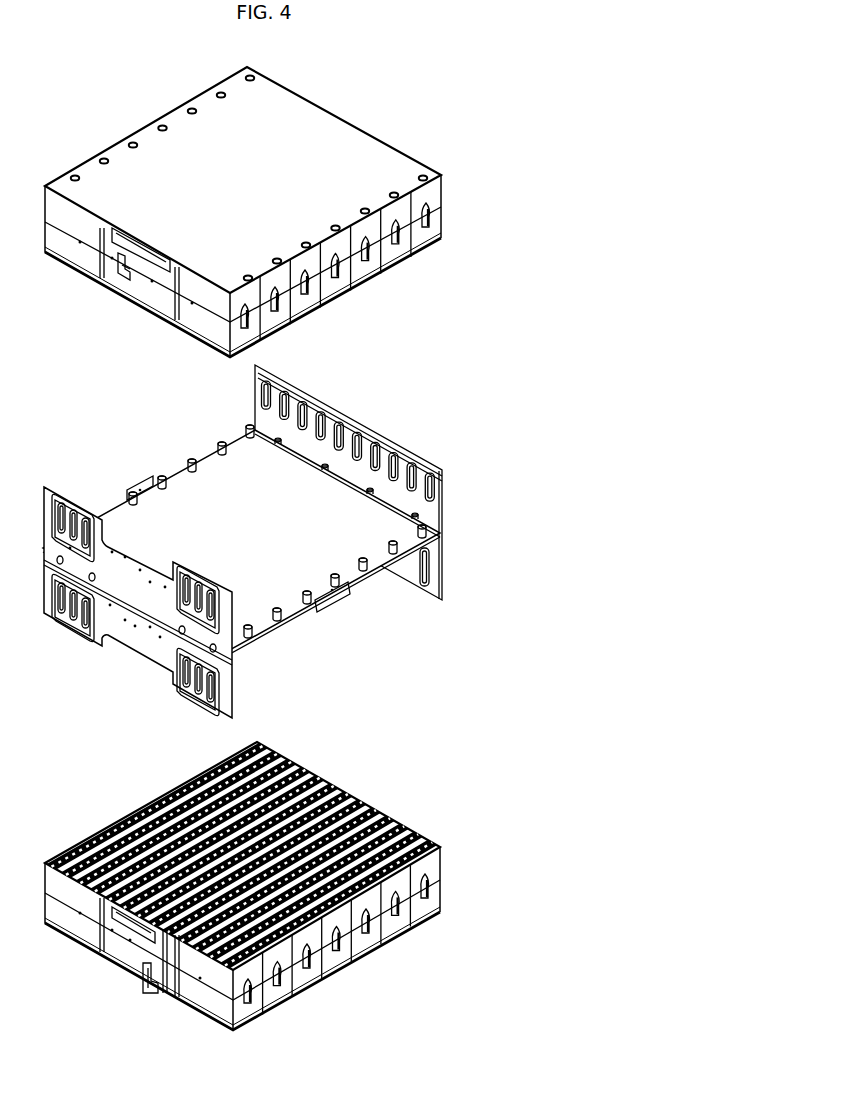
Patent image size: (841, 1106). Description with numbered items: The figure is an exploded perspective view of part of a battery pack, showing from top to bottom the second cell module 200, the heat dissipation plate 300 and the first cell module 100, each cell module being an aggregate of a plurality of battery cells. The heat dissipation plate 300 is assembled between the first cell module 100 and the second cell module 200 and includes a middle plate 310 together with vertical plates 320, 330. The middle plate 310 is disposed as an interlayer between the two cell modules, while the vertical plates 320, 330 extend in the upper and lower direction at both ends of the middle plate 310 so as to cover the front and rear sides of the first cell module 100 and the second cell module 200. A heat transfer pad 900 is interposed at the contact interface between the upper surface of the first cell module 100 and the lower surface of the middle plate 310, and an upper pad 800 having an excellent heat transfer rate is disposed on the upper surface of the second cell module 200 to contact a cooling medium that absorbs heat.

The first cell module 100 is at (242, 886).
The second cell module 200 is at (243, 208).
The heat dissipation plate 300 is at (267, 541).
The middle plate 310 is at (285, 605).
The vertical plate 320 is at (397, 441).
The vertical plate 330 is at (146, 637).
The upper pad 800 is at (367, 157).
The heat transfer pad 900 is at (346, 798).